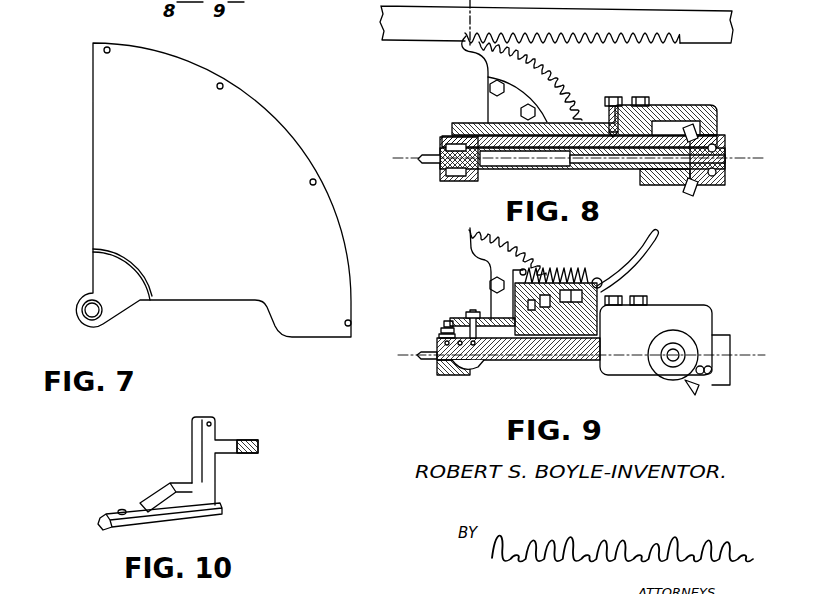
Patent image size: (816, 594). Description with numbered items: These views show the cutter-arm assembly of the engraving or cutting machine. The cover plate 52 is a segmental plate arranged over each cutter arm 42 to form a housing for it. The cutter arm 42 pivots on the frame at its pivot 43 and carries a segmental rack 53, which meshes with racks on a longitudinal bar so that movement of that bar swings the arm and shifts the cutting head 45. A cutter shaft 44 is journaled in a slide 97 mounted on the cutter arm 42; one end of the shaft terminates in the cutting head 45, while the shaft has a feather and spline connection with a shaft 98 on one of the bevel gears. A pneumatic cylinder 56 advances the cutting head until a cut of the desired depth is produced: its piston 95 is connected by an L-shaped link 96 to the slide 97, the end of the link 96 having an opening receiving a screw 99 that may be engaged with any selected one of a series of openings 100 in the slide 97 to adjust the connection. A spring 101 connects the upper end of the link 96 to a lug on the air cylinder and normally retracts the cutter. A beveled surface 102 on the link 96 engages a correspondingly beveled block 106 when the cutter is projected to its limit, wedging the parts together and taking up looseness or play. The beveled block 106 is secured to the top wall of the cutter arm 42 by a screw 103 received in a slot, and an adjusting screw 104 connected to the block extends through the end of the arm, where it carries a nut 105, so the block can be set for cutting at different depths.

In FIG. 7, the cover plate 52 is at (100, 216).
In FIG. 8, the segmental rack 53 is at (556, 80).
In FIG. 9, the segmental rack 53 is at (512, 268).
In FIG. 8, the cutter arm 42 is at (452, 124).
In FIG. 9, the cutter arm 42 is at (455, 319).
In FIG. 8, the slide 97 is at (446, 136).
In FIG. 9, the slide 97 is at (560, 352).
In FIG. 8, the cutter shaft 44 is at (503, 163).
In FIG. 8, the cutting head 45 is at (421, 161).
In FIG. 9, the cutting head 45 is at (421, 357).
In FIG. 8, the shaft 98 is at (618, 170).
In FIG. 9, the spring 101 is at (578, 270).
In FIG. 9, the piston 95 is at (601, 283).
In FIG. 9, the pneumatic cylinder 56 is at (600, 292).
In FIG. 9, the screw 103 is at (472, 314).
In FIG. 9, the beveled block 106 is at (467, 320).
In FIG. 9, the nut 105 is at (447, 326).
In FIG. 9, the adjusting screw 104 is at (444, 331).
In FIG. 9, the screw 99 is at (441, 336).
In FIG. 9, the openings 100 is at (440, 372).
In FIG. 9, the pivot 43 is at (480, 368).
In FIG. 10, the L-shaped link 96 is at (207, 490).
In FIG. 10, the beveled surface 102 is at (162, 492).